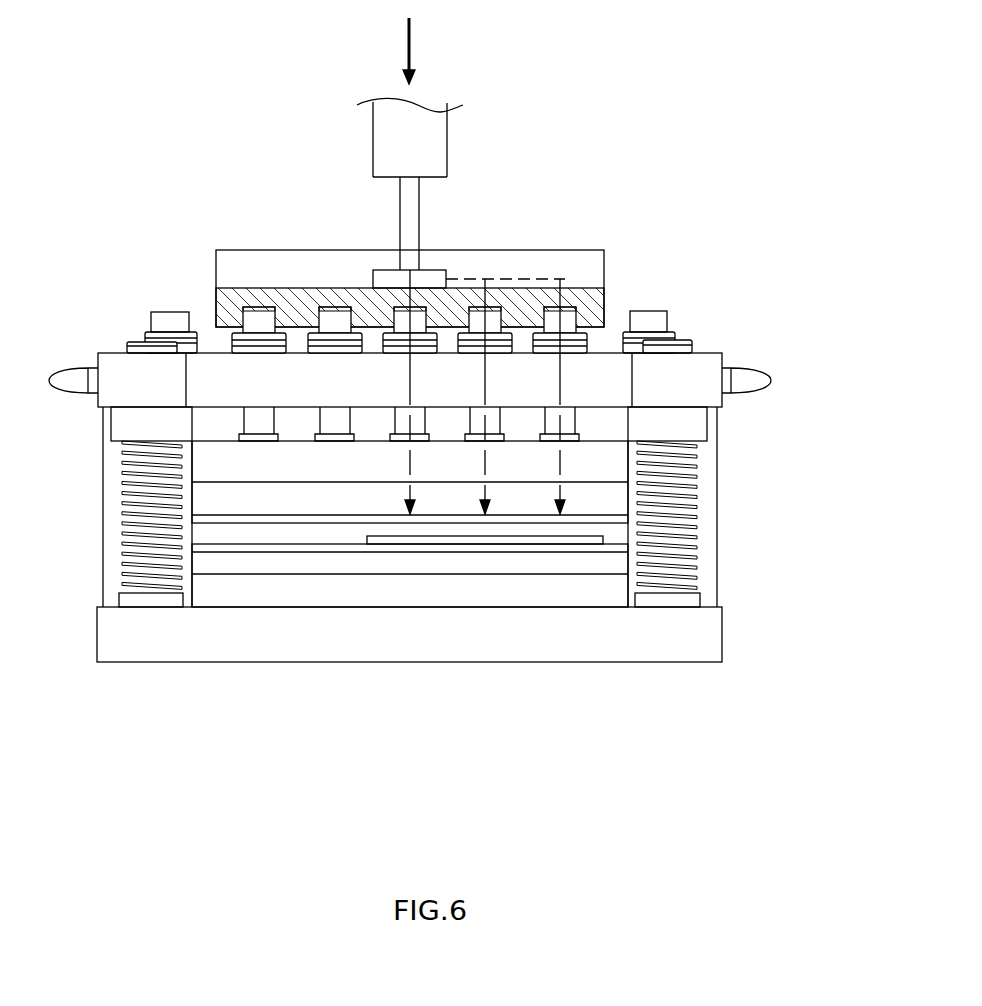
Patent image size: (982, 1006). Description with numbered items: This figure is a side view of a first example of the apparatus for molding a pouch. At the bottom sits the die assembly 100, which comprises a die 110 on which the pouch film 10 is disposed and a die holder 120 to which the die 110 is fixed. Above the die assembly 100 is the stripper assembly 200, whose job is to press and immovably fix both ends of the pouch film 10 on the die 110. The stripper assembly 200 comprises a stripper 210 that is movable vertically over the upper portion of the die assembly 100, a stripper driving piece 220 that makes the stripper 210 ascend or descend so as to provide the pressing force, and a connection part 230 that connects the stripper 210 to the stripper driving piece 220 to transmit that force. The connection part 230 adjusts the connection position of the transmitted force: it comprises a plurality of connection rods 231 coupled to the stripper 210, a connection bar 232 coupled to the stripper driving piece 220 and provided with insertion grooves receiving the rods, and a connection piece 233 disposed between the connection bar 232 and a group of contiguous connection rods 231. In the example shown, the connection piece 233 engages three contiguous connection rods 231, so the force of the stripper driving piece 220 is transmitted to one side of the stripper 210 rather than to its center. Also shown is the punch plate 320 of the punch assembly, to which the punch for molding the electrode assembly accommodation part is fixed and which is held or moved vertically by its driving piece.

The pouch film 10 is at (429, 540).
The die assembly 100 is at (409, 656).
The die 110 is at (559, 589).
The die holder 120 is at (562, 716).
The stripper assembly 200 is at (533, 467).
The stripper 210 is at (610, 500).
The stripper driving piece 220 is at (440, 141).
The connection part 230 is at (424, 306).
The connection rods 231 is at (571, 317).
The connection bar 232 is at (556, 262).
The connection piece 233 is at (409, 261).
The punch plate 320 is at (112, 362).